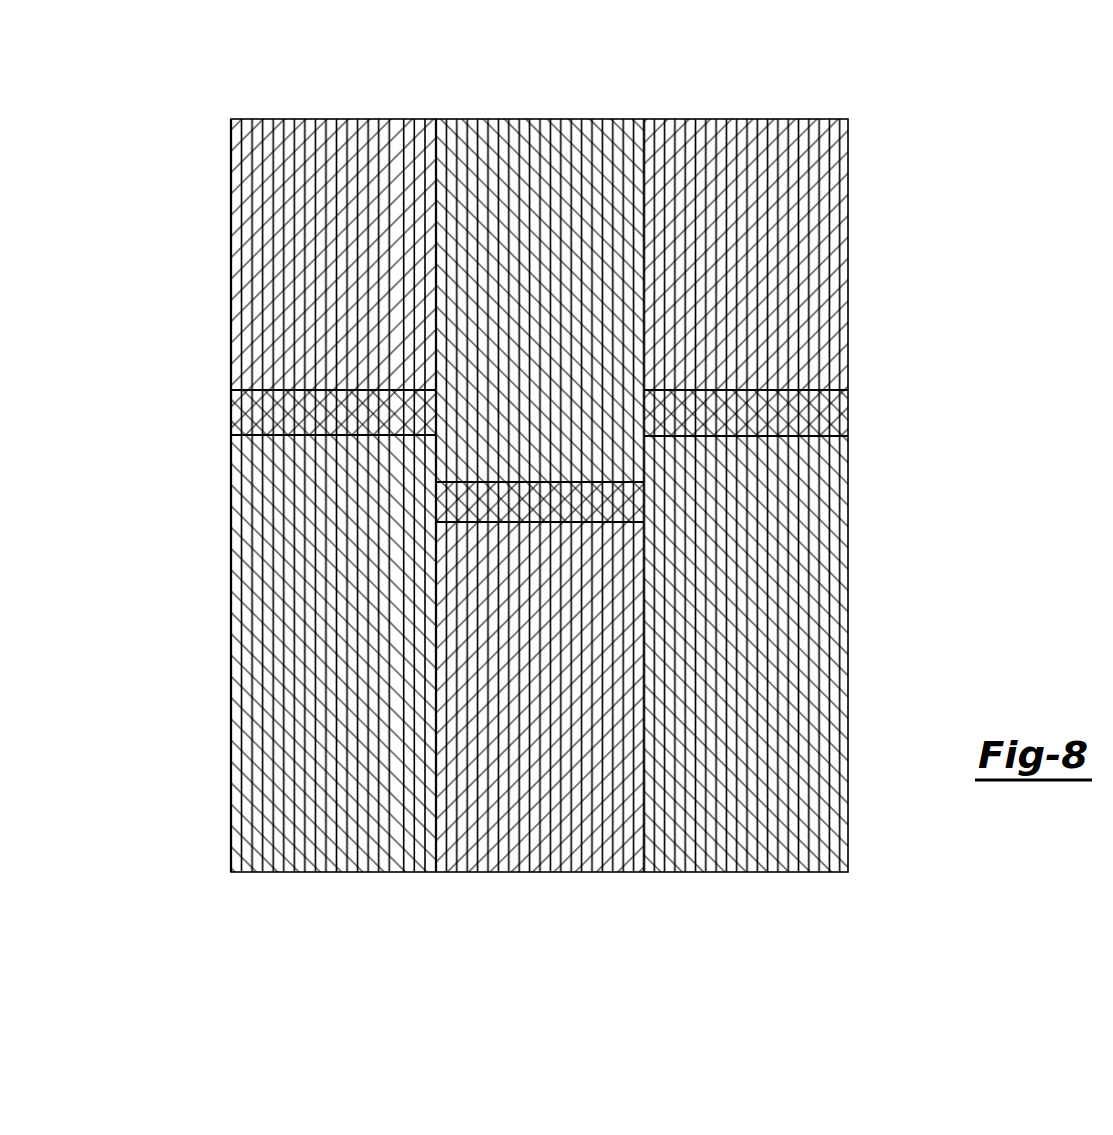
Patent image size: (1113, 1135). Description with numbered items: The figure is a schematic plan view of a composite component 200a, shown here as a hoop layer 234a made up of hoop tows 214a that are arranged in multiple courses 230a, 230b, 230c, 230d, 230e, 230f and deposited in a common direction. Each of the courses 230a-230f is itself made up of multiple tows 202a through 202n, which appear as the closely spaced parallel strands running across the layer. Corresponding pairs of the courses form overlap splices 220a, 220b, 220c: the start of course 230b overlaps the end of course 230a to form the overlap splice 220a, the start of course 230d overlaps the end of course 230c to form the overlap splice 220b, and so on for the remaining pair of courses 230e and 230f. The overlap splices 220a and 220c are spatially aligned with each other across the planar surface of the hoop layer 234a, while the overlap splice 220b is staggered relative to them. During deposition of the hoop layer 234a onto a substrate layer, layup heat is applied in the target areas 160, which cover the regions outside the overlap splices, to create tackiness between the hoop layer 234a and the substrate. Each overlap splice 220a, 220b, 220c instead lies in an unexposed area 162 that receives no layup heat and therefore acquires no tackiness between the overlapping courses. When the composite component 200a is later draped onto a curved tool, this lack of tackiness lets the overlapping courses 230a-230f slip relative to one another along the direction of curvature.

The composite component 200a is at (569, 490).
The tow 202a is at (231, 119).
The tow 202n is at (433, 120).
The hoop layer 234a is at (455, 495).
The hoop tows 214a is at (231, 163).
The target areas 160 is at (200, 872).
The unexposed area 162 is at (540, 456).
The overlap splice 220a is at (197, 390).
The overlap splice 220b is at (404, 482).
The overlap splice 220c is at (883, 390).
The course 230a is at (436, 891).
The course 230b is at (436, 83).
The course 230c is at (644, 891).
The course 230d is at (644, 83).
The course 230e is at (850, 892).
The course 230f is at (850, 85).